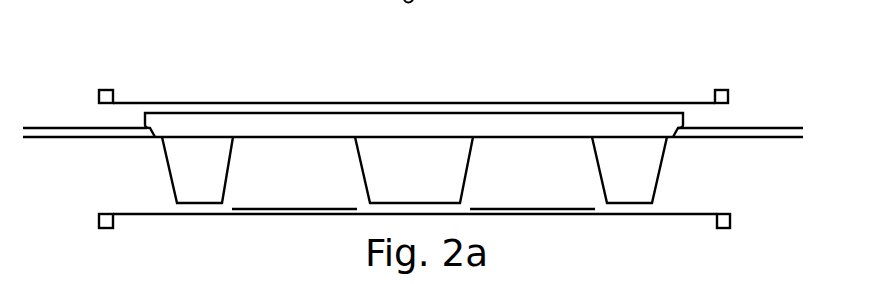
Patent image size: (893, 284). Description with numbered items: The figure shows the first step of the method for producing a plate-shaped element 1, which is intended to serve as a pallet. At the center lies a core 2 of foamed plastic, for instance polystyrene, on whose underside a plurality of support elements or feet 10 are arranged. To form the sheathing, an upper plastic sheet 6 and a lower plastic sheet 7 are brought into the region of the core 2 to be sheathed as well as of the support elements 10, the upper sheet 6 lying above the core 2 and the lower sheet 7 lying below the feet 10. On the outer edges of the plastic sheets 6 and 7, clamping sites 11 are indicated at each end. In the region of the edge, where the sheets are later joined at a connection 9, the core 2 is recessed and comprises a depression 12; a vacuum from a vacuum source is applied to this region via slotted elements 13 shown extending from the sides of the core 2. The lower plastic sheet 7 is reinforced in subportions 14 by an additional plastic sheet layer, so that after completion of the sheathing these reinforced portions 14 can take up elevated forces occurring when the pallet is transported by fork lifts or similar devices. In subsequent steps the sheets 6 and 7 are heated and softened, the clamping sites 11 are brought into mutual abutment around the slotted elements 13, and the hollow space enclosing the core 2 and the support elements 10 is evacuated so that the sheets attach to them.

The plate-shaped element 1 is at (648, 97).
The core 2 is at (275, 128).
The plastic sheet 6 is at (580, 101).
The plastic sheet 7 is at (672, 216).
The connection 9 is at (688, 125).
The support elements 10 is at (197, 179).
The clamping sites 11 is at (100, 90).
The depression 12 is at (150, 130).
The slotted elements 13 is at (80, 130).
The reinforced portions 14 is at (295, 211).